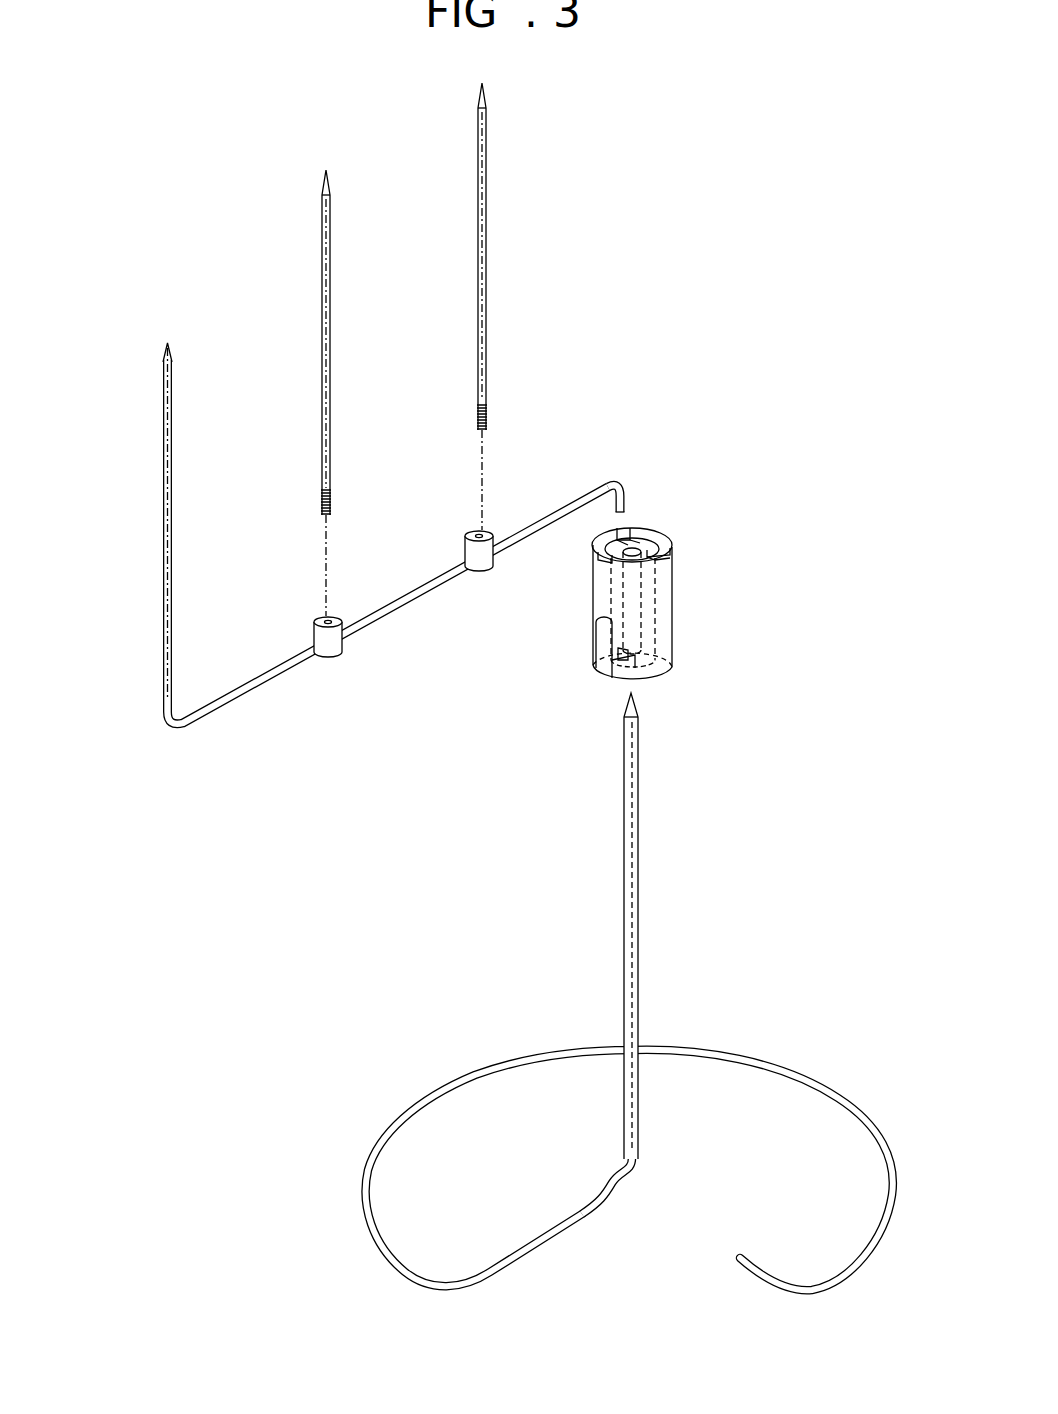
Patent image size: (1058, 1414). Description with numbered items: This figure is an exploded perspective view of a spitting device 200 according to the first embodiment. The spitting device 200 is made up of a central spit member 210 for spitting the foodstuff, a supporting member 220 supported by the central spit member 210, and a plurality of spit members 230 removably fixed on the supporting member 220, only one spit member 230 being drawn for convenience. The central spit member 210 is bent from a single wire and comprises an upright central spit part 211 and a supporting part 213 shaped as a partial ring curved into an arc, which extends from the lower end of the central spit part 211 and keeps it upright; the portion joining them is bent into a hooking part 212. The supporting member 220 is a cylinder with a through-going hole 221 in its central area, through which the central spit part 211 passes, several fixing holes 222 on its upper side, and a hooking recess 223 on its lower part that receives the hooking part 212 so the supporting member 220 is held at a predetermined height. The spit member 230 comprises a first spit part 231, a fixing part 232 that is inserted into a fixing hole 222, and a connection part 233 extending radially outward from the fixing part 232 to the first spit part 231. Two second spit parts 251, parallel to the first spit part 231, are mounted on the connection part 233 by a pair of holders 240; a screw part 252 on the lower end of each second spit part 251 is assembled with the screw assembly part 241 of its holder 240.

The spitting device 200 is at (818, 290).
The central spit member 210 is at (803, 957).
The central spit part 211 is at (640, 752).
The hooking part 212 is at (625, 1182).
The supporting part 213 is at (845, 1103).
The supporting member 220 is at (700, 612).
The through-going hole 221 is at (638, 540).
The fixing hole 222 is at (672, 548).
The hooking recess 223 is at (600, 665).
The spit member 230 is at (155, 575).
The first spit part 231 is at (163, 396).
The fixing part 232 is at (625, 494).
The connection part 233 is at (228, 706).
The holder 240 is at (340, 655).
The screw assembly part 241 is at (316, 618).
The second spit part 251 is at (478, 137).
The screw part 252 is at (478, 413).